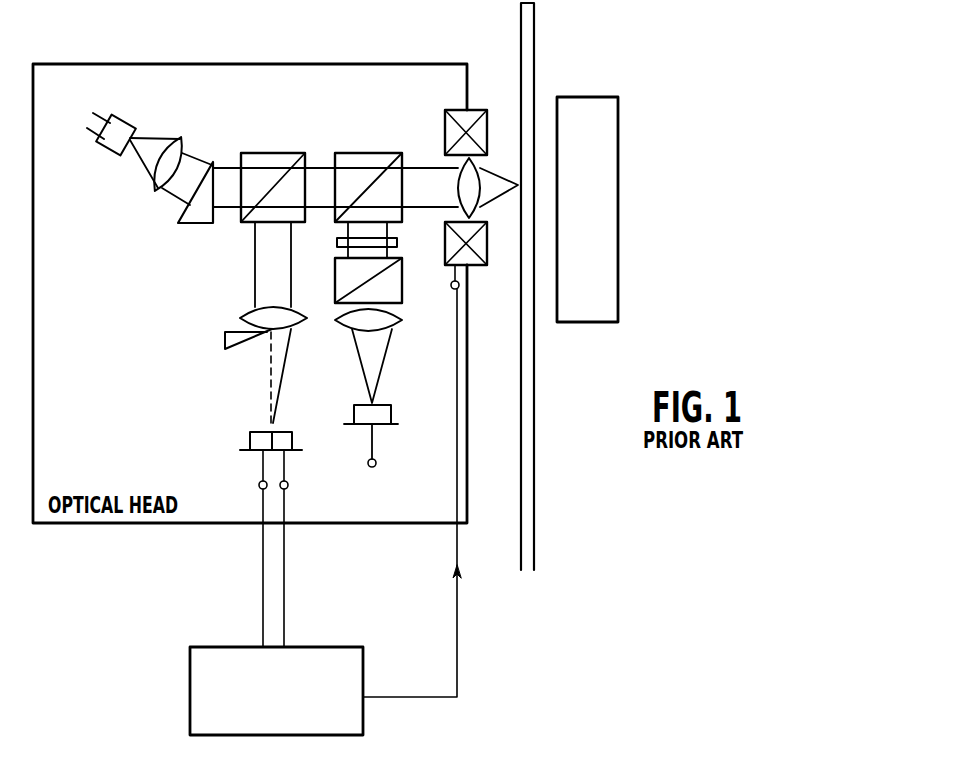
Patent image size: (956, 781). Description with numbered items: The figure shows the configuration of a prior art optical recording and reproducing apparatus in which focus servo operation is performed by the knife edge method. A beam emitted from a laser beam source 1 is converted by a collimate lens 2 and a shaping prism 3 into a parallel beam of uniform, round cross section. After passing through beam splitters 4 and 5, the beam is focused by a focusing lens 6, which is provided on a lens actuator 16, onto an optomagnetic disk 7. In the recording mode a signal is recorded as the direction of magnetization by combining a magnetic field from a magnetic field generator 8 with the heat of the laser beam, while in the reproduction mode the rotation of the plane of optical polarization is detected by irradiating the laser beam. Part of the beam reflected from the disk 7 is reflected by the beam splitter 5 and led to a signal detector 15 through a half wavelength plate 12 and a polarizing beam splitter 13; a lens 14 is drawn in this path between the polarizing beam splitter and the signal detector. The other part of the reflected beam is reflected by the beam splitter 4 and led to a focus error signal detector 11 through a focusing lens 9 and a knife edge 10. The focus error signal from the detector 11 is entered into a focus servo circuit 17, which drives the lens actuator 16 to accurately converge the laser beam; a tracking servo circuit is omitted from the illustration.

The laser beam source 1 is at (138, 122).
The collimate lens 2 is at (182, 137).
The shaping prism 3 is at (222, 162).
The beam splitter 4 is at (267, 153).
The beam splitter 5 is at (358, 153).
The focusing lens 6 is at (480, 163).
The optomagnetic disk 7 is at (533, 100).
The magnetic field generator 8 is at (618, 153).
The focusing lens 9 is at (293, 306).
The knife edge 10 is at (243, 345).
The focus error signal detector 11 is at (250, 450).
The ½ wavelength plate 12 is at (398, 243).
The polarizing beam splitter 13 is at (402, 297).
The condensing lens 14 is at (397, 322).
The signal detector 15 is at (393, 413).
The lens actuator 16 is at (475, 268).
The focus servo circuit 17 is at (315, 645).